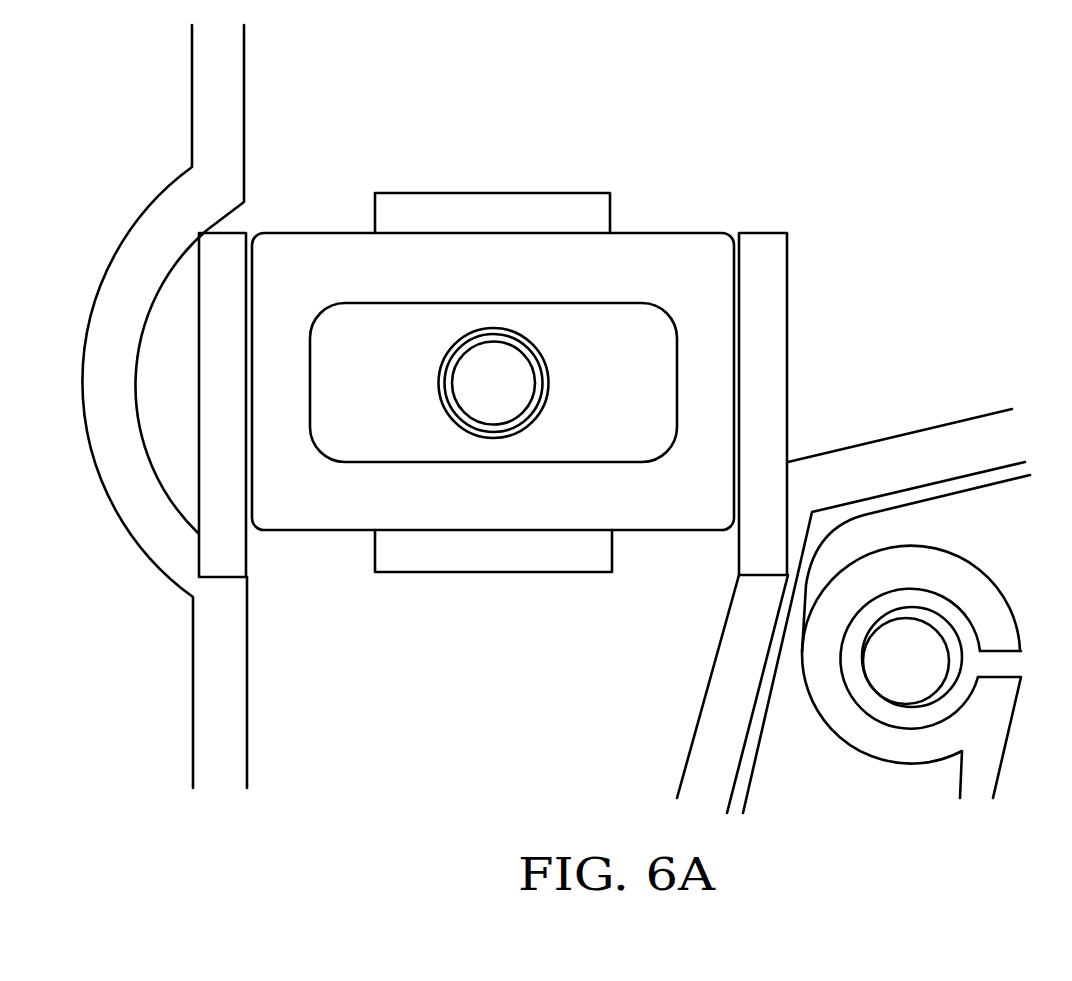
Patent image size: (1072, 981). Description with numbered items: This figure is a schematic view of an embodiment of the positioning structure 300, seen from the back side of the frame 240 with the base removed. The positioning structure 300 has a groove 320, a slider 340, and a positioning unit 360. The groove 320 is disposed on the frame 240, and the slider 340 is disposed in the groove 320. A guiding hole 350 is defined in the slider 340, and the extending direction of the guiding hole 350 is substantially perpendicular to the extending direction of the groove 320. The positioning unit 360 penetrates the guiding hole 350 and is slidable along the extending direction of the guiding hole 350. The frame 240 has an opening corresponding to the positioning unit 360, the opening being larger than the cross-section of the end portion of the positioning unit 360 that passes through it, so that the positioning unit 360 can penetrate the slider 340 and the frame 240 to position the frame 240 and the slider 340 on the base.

The frame 240 is at (353, 113).
The positioning structure 300 is at (721, 190).
The groove 320 is at (656, 562).
The slider 340 is at (477, 270).
The guiding hole 350 is at (666, 335).
The positioning unit 360 is at (514, 395).